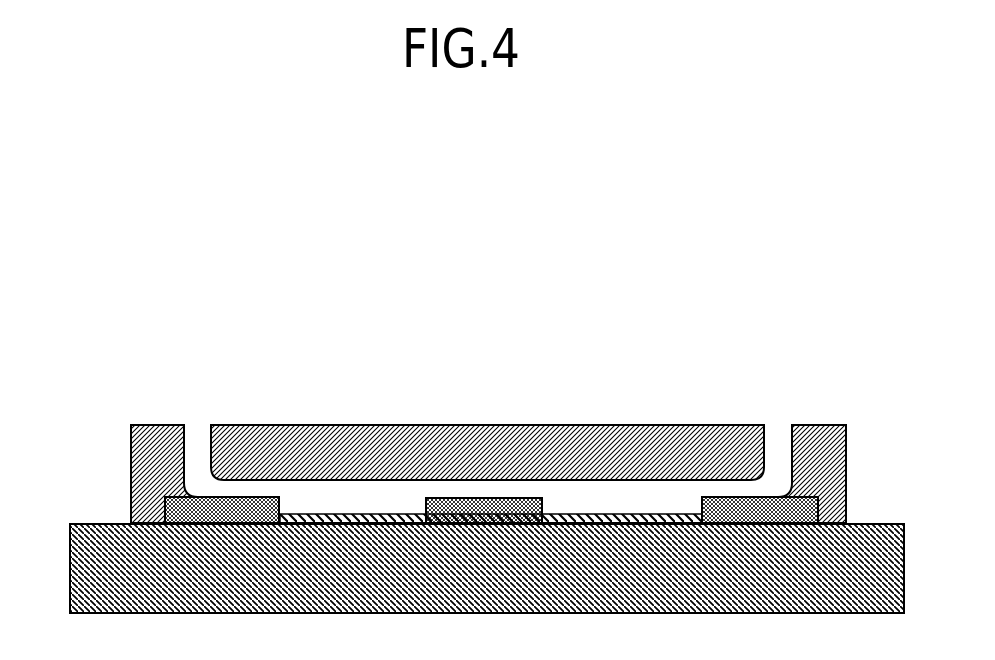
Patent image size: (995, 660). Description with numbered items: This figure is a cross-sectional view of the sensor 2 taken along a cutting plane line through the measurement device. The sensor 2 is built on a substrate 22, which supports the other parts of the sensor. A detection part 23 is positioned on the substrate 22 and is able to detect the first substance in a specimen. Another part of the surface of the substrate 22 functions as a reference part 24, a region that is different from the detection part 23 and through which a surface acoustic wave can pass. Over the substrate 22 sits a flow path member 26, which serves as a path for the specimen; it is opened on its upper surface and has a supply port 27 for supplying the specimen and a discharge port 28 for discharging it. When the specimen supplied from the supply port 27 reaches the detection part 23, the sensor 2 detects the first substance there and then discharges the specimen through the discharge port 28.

The sensor 2 is at (291, 235).
The substrate 22 is at (107, 525).
The detection part 23 is at (332, 515).
The reference part 24 is at (580, 512).
The flow path member 26 is at (673, 500).
The supply port 27 is at (198, 423).
The discharge port 28 is at (777, 428).